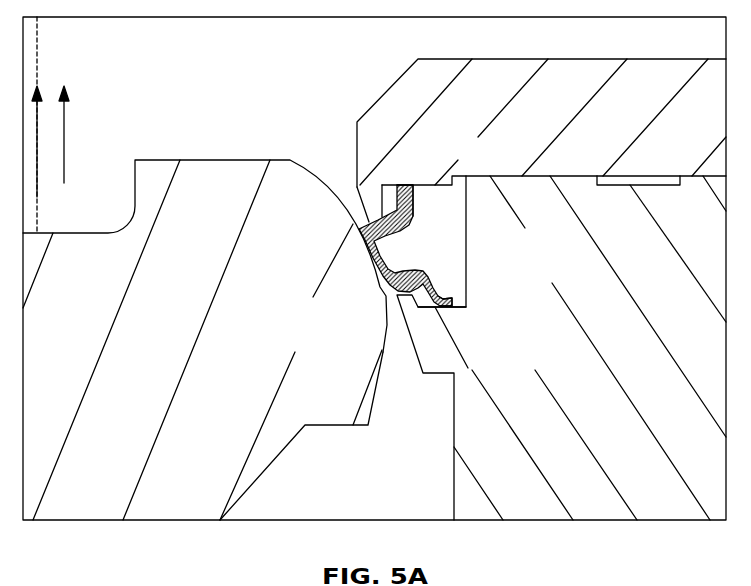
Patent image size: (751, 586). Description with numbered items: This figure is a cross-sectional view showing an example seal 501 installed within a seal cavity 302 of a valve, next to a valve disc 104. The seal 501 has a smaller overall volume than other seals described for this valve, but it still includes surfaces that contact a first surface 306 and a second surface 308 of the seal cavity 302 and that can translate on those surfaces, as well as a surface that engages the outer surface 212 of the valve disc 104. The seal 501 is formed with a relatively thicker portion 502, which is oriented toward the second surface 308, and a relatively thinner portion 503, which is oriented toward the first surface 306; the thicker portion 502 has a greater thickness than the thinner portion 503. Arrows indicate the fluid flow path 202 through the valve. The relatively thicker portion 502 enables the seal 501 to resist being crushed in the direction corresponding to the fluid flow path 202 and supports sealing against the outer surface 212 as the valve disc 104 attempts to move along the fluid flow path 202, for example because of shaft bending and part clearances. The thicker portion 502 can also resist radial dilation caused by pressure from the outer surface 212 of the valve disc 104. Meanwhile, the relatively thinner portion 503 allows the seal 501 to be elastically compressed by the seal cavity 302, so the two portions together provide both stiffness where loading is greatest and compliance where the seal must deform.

The valve disc 104 is at (190, 173).
The fluid flow path 202 is at (65, 117).
The outer surface 212 is at (385, 308).
The seal cavity 302 is at (443, 223).
The first surface 306 is at (457, 310).
The second surface 308 is at (423, 182).
The seal 501 is at (367, 248).
The relatively thicker portion 502 is at (396, 186).
The relatively thinner portion 503 is at (470, 367).